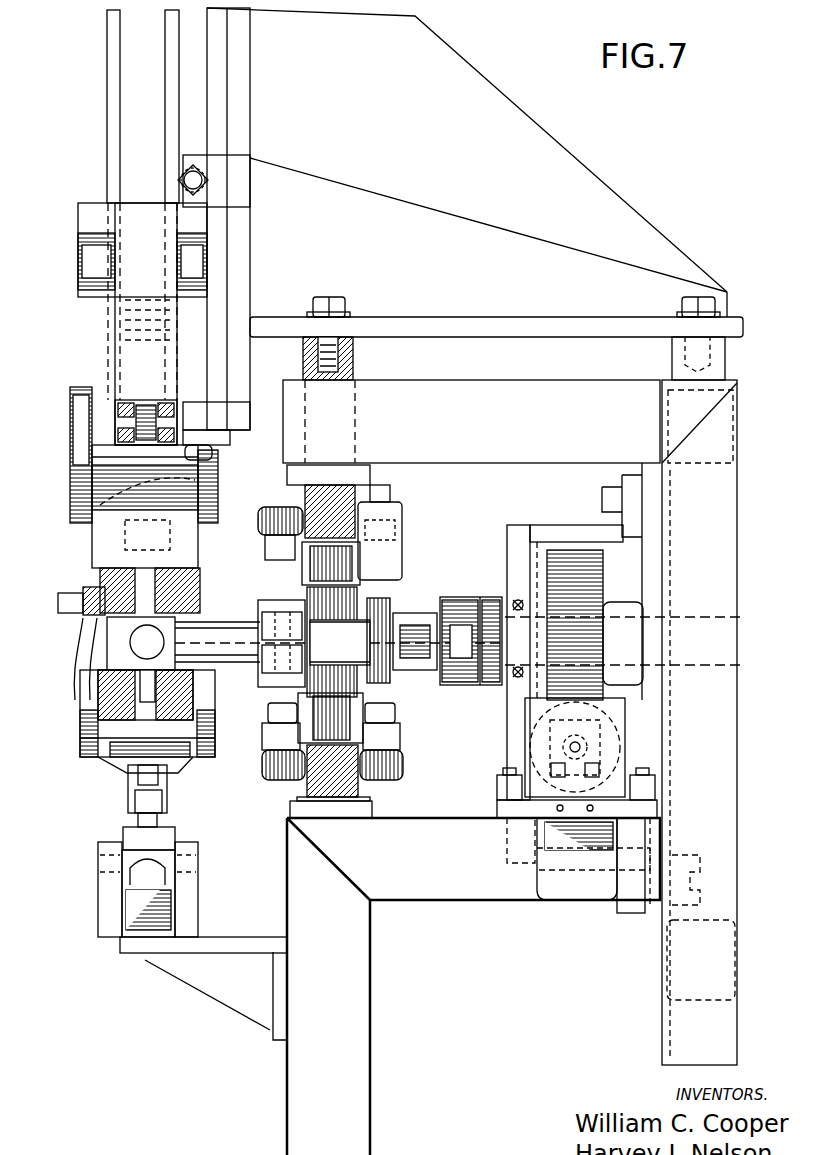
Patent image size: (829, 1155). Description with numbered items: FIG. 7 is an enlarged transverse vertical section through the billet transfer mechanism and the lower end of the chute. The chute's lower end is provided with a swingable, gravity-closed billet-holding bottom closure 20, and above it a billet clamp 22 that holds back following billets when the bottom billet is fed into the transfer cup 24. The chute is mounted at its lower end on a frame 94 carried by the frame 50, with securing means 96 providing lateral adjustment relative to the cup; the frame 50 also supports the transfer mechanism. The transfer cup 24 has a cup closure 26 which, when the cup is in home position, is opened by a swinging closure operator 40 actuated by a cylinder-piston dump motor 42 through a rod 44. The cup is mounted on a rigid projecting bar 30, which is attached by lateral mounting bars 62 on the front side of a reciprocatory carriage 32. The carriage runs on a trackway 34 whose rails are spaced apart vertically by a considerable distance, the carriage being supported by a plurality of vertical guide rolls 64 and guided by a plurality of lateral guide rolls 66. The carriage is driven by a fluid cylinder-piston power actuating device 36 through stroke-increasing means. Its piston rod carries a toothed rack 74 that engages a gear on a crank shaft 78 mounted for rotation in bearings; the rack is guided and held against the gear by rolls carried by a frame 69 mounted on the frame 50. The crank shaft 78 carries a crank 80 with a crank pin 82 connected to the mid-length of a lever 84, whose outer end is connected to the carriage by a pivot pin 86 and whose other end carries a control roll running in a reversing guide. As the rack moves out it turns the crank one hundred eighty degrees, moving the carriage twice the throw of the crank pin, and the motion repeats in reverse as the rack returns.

The bottom closure 20 is at (100, 510).
The billet clamp 22 is at (122, 348).
The transfer cup 24 is at (128, 708).
The cup closure 26 is at (110, 742).
The projecting bar 30 is at (140, 645).
The carriage 32 is at (357, 597).
The trackway 34 is at (305, 492).
The power actuating device 36 is at (540, 746).
The closure operator 40 is at (165, 802).
The dump motor 42 is at (140, 867).
The rod 44 is at (158, 822).
The frame 50 is at (278, 1107).
The lateral mounting bars 62 is at (245, 660).
The vertical guide rolls 64 is at (312, 580).
The lateral guide rolls 66 is at (264, 512).
The frame 69 is at (507, 531).
The toothed rack 74 is at (598, 579).
The crank shaft 78 is at (507, 600).
The crank 80 is at (492, 600).
The crank pin 82 is at (481, 674).
The lever 84 is at (405, 672).
The pivot pin 86 is at (390, 615).
The frame 94 is at (682, 247).
The securing means 96 is at (346, 301).